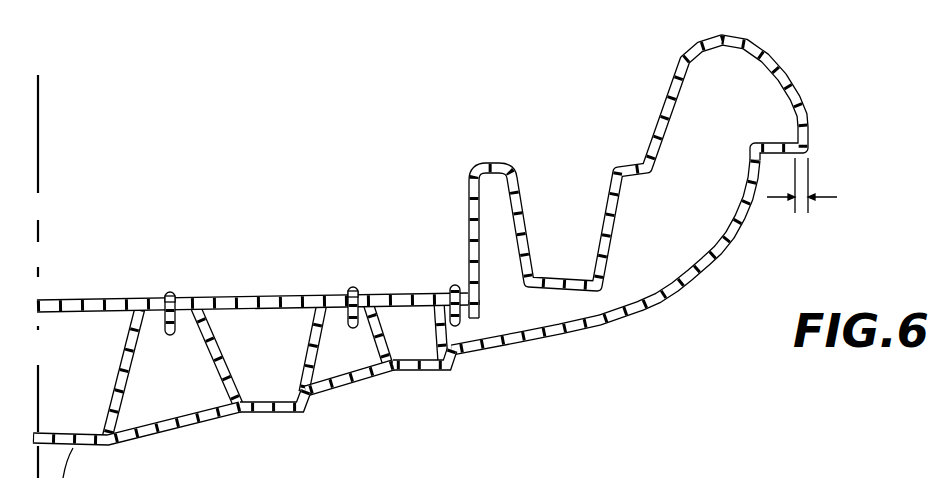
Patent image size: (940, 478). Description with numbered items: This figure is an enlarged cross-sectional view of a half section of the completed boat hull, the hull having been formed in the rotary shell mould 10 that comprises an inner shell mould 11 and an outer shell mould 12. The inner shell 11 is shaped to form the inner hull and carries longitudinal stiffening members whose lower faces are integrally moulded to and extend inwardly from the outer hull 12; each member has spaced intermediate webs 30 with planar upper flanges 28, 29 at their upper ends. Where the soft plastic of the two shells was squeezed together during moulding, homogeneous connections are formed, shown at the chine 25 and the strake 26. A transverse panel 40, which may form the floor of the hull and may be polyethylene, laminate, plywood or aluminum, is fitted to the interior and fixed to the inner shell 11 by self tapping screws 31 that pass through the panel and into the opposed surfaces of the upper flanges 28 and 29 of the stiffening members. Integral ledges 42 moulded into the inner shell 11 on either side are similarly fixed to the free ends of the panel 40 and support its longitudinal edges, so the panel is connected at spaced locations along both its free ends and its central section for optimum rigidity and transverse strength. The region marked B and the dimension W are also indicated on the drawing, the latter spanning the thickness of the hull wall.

The rotary shell mould 10 is at (445, 245).
The inner shell mould 11 is at (673, 90).
The outer shell mould 12 is at (708, 283).
The chine 25 is at (437, 370).
The strake 26 is at (267, 412).
The upper flange 28 is at (352, 293).
The upper flange 29 is at (173, 300).
The intermediate web 30 is at (123, 367).
The self tapping screw 31 is at (173, 337).
The transverse panel 40 is at (100, 300).
The integral ledge 42 is at (477, 318).
The bonding region B is at (434, 262).
The wall thickness W is at (817, 185).